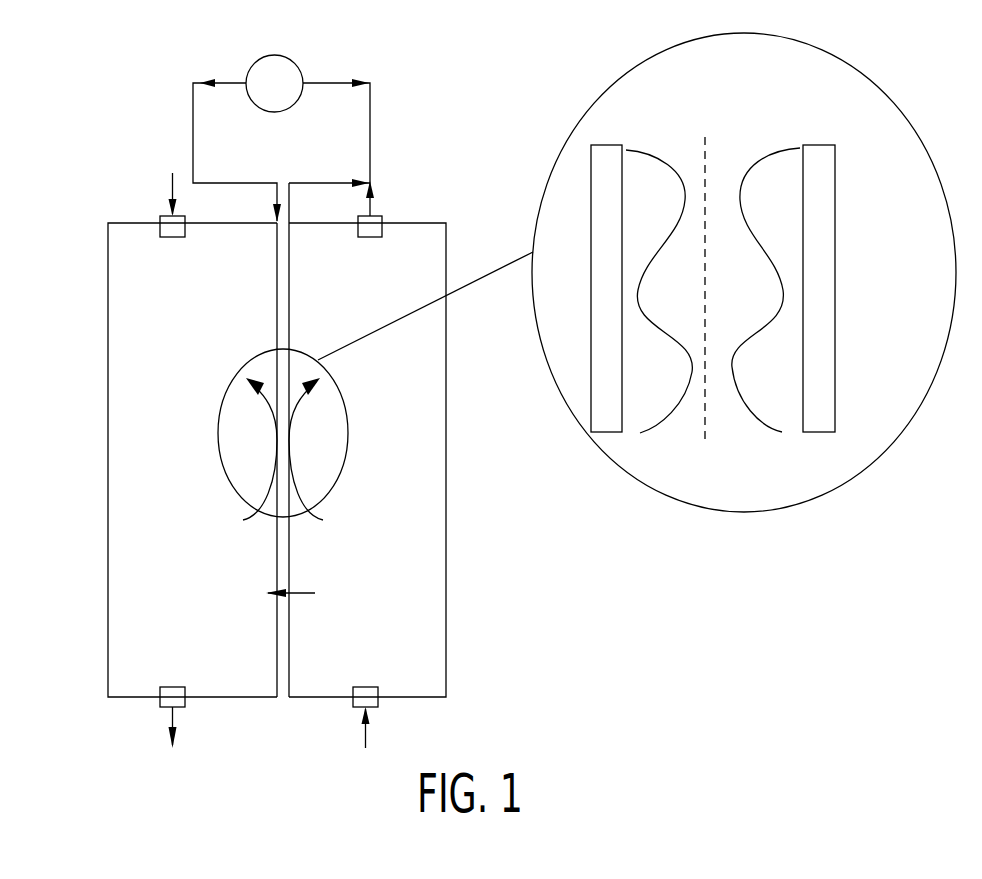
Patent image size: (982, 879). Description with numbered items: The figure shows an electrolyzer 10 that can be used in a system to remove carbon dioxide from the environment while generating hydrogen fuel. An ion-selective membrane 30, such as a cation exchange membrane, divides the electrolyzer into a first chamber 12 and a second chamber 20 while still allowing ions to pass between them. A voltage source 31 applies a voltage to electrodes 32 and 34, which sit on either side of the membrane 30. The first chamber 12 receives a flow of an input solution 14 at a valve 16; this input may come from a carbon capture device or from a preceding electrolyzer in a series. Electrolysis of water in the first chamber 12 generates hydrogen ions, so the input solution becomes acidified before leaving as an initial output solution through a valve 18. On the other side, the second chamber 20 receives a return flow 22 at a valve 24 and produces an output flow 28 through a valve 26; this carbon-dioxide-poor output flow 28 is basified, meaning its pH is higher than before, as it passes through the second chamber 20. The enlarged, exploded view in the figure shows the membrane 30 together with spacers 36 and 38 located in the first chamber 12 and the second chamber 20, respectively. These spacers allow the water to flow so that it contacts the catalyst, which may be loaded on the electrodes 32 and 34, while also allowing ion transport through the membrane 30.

The electrolyzer 10 is at (452, 127).
The first chamber 12 is at (447, 240).
The input solution 14 is at (370, 728).
The valve 16 is at (366, 686).
The valve 18 is at (370, 238).
The second chamber 20 is at (108, 415).
The return flow 22 is at (172, 173).
The valve 24 is at (172, 238).
The valve 26 is at (173, 686).
The output flow 28 is at (177, 720).
The membrane 30 is at (290, 333).
The voltage source 31 is at (274, 112).
The electrode 32 is at (813, 144).
The electrode 34 is at (597, 143).
The spacer 36 is at (772, 156).
The spacer 38 is at (660, 157).